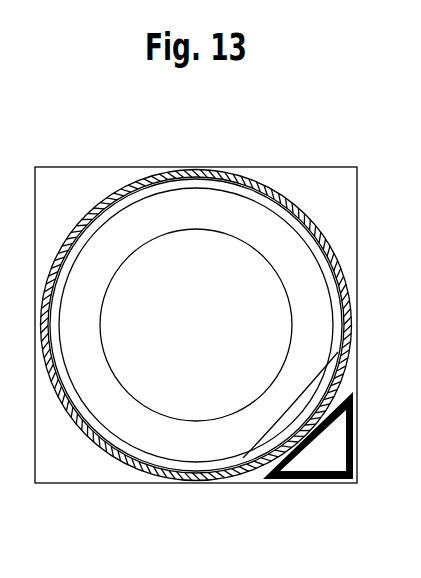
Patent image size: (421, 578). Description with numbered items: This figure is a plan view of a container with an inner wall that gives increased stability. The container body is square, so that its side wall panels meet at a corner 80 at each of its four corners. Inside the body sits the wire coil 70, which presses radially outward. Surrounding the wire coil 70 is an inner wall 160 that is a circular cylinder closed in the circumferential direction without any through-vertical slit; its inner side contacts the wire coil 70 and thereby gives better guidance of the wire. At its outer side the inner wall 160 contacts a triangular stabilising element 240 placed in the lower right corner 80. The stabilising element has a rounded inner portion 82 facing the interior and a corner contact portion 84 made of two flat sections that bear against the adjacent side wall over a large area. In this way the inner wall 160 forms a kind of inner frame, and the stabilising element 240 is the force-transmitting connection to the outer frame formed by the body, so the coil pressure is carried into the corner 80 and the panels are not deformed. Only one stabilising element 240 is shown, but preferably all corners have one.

The wire coil 70 is at (208, 205).
The corner 80 is at (358, 166).
The rounded inner portion 82 is at (288, 417).
The corner contact portion 84 is at (308, 468).
The inner wall 160 is at (107, 197).
The stabilising element 240 is at (359, 390).